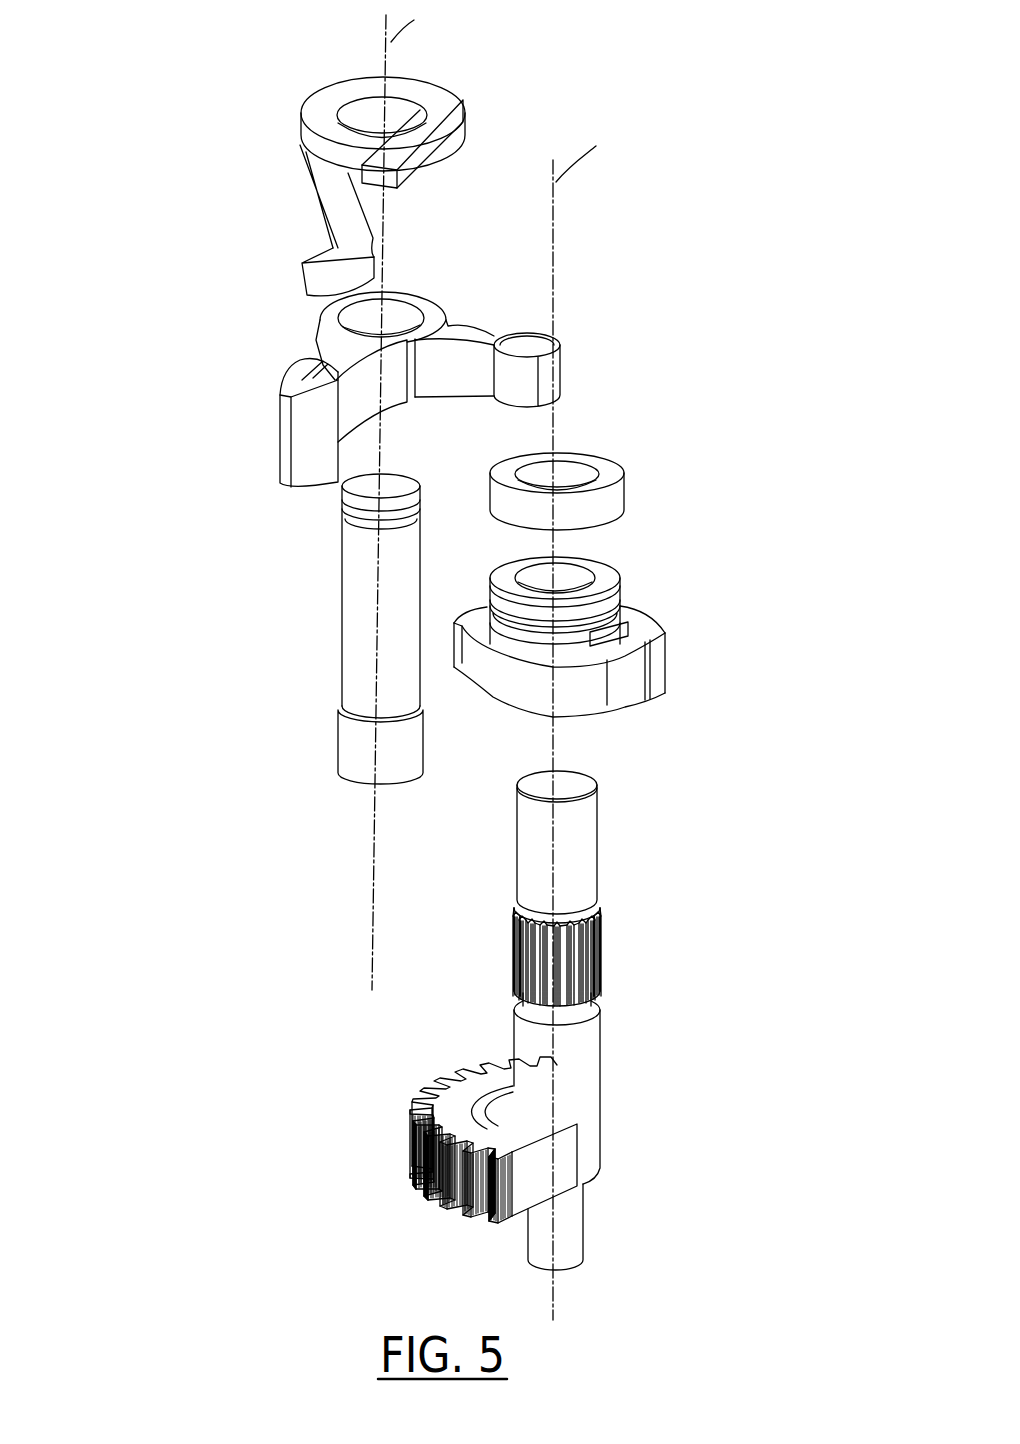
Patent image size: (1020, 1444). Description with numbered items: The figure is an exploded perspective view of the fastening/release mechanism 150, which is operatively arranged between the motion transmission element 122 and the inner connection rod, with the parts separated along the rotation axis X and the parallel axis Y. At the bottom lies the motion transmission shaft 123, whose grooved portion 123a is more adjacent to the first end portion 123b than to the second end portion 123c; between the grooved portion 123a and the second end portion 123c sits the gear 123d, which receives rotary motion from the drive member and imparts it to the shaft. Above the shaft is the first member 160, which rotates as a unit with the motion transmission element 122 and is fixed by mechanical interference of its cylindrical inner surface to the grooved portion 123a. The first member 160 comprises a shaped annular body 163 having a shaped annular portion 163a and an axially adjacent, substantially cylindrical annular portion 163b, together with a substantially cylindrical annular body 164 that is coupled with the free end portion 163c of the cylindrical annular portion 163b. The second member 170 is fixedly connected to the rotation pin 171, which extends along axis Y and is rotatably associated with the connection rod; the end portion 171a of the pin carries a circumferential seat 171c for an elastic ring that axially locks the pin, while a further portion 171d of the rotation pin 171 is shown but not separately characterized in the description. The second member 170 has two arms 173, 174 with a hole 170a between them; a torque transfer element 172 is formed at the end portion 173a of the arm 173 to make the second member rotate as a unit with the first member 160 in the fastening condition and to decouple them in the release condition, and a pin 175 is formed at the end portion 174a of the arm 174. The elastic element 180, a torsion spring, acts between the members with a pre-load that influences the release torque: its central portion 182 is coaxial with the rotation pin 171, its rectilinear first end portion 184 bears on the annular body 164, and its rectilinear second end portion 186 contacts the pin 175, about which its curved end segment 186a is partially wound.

The fastening/release mechanism 150 is at (157, 104).
The elastic element 180 is at (290, 176).
The central portion 182 is at (315, 106).
The first end portion 184 is at (409, 148).
The second end portion 186 is at (236, 220).
The curved end segment 186a is at (328, 201).
The second member 170 is at (456, 363).
The hole 170a is at (358, 325).
The torque transfer element 172 is at (520, 382).
The arm 173 is at (582, 323).
The end portion 173a is at (545, 340).
The arm 174 is at (224, 380).
The end portion 174a is at (287, 432).
The pin 175 is at (328, 370).
The rotation pin 171 is at (291, 629).
The end portion 171a is at (340, 537).
The circumferential seat 171c is at (347, 512).
The pin head 171d is at (355, 748).
The first member 160 is at (624, 636).
The substantially cylindrical annular body 164 is at (620, 506).
The shaped annular body 163 is at (624, 619).
The shaped annular portion 163a is at (668, 642).
The substantially cylindrical annular portion 163b is at (628, 597).
The free end portion 163c is at (520, 575).
The motion transmission element 122 is at (511, 1033).
The motion transmission shaft 123 is at (507, 1033).
The grooved portion 123a is at (594, 940).
The first end portion 123b is at (593, 815).
The second end portion 123c is at (575, 1240).
The gear 123d is at (423, 1103).